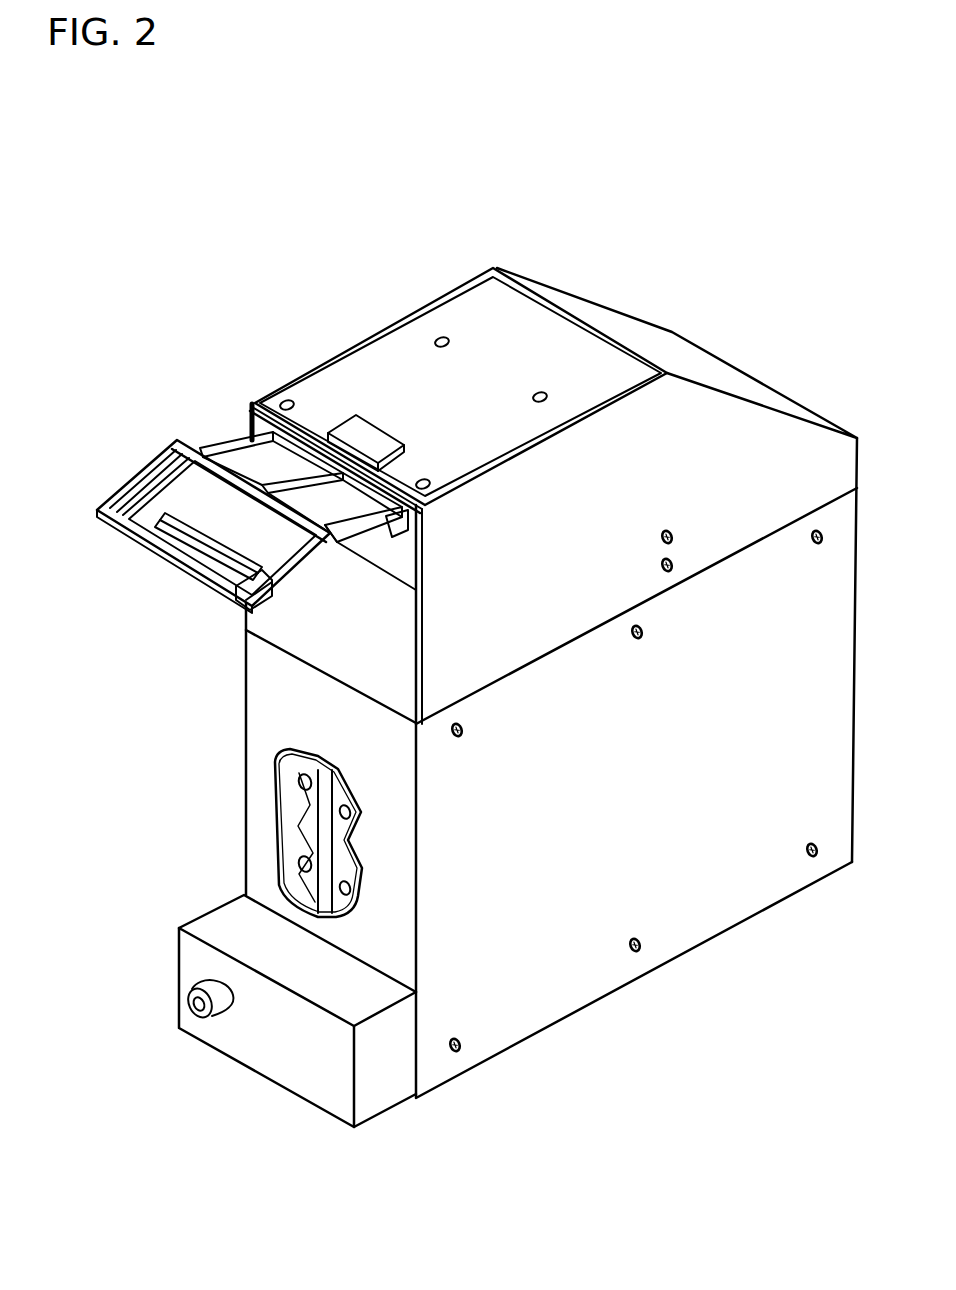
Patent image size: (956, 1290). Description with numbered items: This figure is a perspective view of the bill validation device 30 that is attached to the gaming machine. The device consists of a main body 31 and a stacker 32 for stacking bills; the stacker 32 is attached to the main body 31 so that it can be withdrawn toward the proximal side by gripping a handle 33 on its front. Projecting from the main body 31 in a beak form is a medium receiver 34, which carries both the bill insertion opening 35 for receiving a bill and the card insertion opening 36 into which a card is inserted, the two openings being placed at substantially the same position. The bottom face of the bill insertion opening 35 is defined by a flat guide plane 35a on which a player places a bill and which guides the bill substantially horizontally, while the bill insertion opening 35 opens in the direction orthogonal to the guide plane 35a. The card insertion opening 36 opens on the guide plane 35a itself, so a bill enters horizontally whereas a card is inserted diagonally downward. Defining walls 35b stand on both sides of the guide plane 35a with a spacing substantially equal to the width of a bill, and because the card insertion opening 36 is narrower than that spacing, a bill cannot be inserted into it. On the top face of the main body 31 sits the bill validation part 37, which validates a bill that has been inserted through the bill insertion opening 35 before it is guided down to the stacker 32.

The bill validation device 30 is at (525, 216).
The main body 31 is at (387, 328).
The stacker 32 is at (259, 836).
The handle 33 is at (280, 794).
The medium receiver 34 is at (218, 441).
The bill insertion opening 35 is at (163, 462).
The guide plane 35a is at (235, 523).
The defining walls 35b is at (118, 507).
The card insertion opening 36 is at (185, 532).
The bill validation part 37 is at (362, 380).